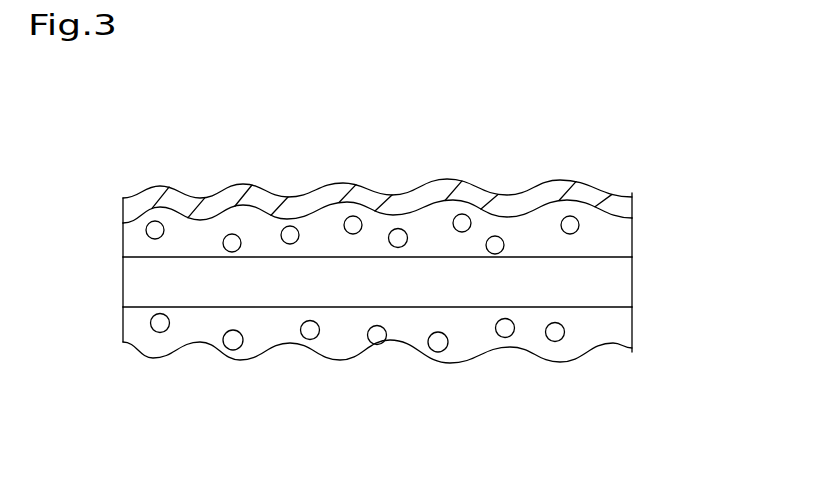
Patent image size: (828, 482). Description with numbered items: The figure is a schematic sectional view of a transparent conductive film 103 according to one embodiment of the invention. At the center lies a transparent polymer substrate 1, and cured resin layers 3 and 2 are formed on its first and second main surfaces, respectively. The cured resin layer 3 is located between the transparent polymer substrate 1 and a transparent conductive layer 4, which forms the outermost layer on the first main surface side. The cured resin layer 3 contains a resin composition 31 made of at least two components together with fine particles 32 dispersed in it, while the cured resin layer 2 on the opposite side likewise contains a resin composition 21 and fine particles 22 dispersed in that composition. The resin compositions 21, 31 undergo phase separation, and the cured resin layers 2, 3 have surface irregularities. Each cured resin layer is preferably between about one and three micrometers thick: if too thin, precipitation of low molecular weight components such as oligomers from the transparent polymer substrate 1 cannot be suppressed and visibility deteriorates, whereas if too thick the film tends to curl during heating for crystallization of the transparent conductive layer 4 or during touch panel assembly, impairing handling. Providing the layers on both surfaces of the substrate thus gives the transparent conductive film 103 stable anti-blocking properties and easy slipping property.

The transparent conductive film 103 is at (541, 147).
The transparent conductive layer 4 is at (625, 203).
The cured resin layer 3 is at (622, 240).
The resin composition 31 is at (207, 233).
The fine particles 32 is at (153, 229).
The transparent polymer substrate 1 is at (622, 285).
The cured resin layer 2 is at (622, 332).
The resin composition 21 is at (130, 323).
The fine particles 22 is at (553, 340).